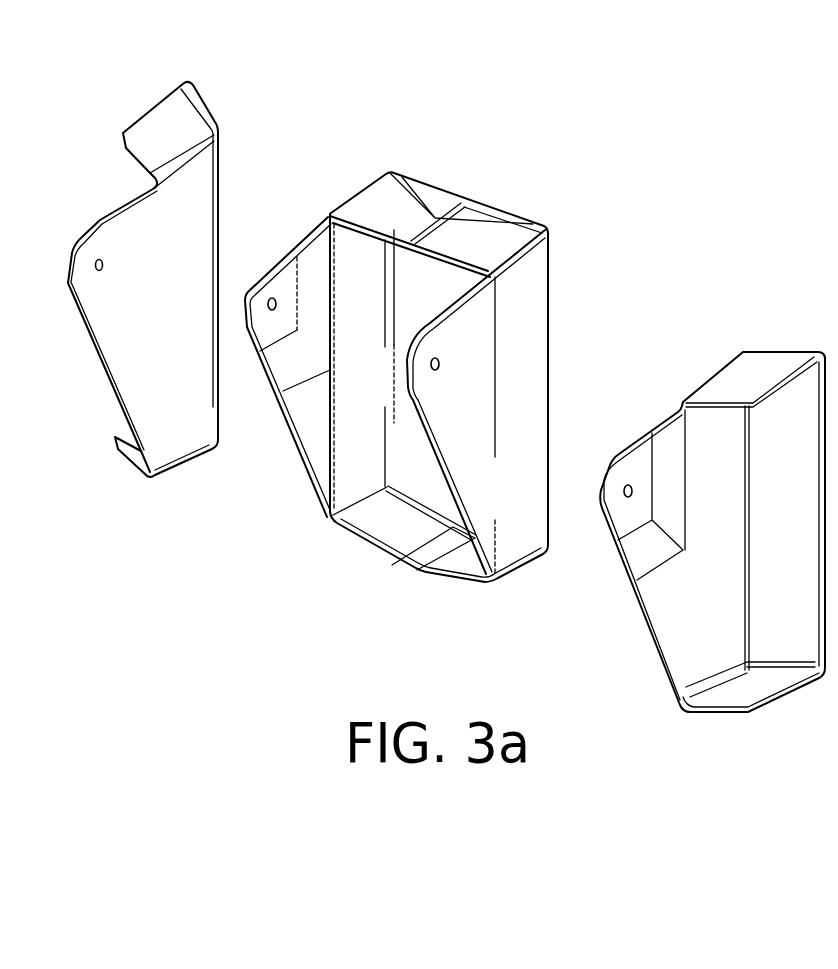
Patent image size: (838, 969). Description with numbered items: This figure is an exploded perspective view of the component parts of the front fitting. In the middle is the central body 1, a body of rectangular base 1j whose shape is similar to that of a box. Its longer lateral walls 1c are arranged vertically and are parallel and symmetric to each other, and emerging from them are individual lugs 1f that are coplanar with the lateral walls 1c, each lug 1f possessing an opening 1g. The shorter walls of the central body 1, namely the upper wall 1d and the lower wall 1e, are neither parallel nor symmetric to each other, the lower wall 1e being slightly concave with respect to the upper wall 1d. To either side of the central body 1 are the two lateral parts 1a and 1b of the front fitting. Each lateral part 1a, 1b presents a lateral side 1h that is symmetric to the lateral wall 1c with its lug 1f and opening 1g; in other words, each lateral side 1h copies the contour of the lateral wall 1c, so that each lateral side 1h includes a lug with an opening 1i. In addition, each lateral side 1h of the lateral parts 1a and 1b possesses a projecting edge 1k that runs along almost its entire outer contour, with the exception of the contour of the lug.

The central body of the front fitting 1 is at (502, 183).
The lateral part of the front fitting 1a is at (218, 92).
The lateral part of the front fitting 1b is at (773, 326).
The lateral wall of the central body 1c is at (368, 262).
The upper wall of the central body 1d is at (480, 215).
The lower wall of the central body 1e is at (460, 562).
The lug of the lateral walls 1f is at (312, 415).
The opening of the lugs 1g is at (272, 298).
The lateral side of the lateral parts 1h is at (112, 242).
The opening of the lateral sides 1i is at (95, 265).
The rectangular base of the central body 1j is at (490, 263).
The projecting edge of the lateral parts 1k is at (173, 123).